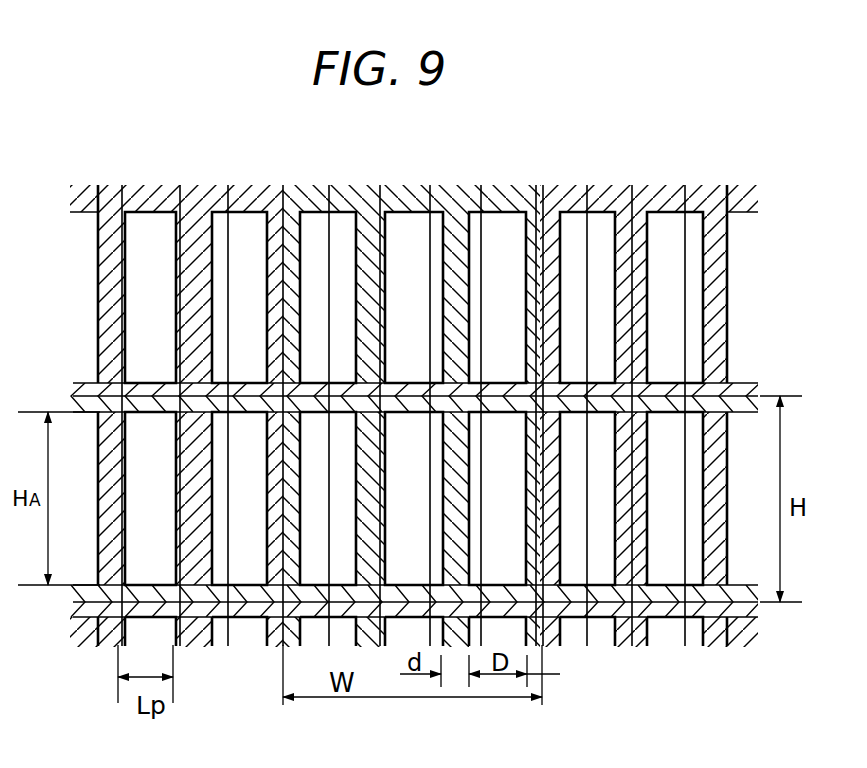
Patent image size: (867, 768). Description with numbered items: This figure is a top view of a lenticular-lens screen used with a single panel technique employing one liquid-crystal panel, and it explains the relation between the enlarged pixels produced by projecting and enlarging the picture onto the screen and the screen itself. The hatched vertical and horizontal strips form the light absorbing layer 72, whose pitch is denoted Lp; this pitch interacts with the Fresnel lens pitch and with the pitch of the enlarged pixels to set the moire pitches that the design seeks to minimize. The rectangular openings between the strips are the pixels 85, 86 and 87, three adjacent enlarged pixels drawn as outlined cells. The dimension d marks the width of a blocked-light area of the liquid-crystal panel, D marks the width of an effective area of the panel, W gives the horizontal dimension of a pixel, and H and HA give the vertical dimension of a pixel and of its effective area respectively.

The light absorbing layer 72 is at (587, 192).
The pixel 85 is at (498, 226).
The pixel 86 is at (398, 226).
The pixel 87 is at (310, 226).